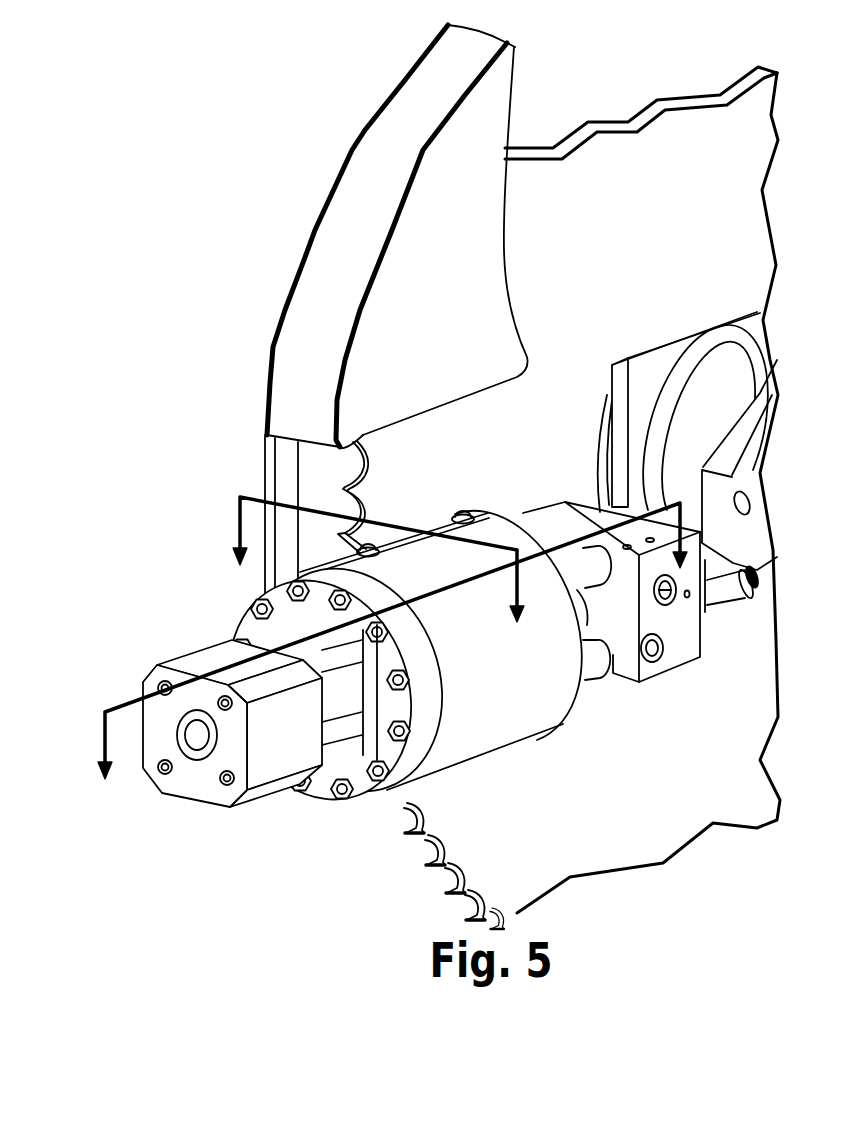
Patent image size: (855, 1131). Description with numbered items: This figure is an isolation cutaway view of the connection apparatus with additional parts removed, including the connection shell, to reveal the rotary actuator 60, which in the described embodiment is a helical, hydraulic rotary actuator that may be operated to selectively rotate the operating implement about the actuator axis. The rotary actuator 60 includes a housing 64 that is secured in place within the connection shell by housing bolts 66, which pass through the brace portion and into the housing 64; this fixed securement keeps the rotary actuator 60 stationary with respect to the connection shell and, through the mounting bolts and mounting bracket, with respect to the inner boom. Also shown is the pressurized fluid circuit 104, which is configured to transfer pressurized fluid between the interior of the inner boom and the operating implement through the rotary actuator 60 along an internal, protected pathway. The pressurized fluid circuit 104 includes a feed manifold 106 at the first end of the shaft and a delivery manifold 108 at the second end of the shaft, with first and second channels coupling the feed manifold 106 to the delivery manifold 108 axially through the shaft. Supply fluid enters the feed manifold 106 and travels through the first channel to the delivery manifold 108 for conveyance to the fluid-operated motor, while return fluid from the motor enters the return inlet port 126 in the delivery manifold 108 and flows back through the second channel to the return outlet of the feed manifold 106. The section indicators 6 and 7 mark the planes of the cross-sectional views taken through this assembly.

The rotary actuator 60 is at (500, 758).
The housing 64 is at (538, 718).
The housing bolts 66 is at (337, 802).
The pressurized fluid circuit 104 is at (293, 716).
The feed manifold 106 is at (255, 800).
The delivery manifold 108 is at (682, 633).
The return inlet port 126 is at (673, 596).
The section line 6- 6 is at (377, 580).
The section line 7- 7 is at (392, 622).